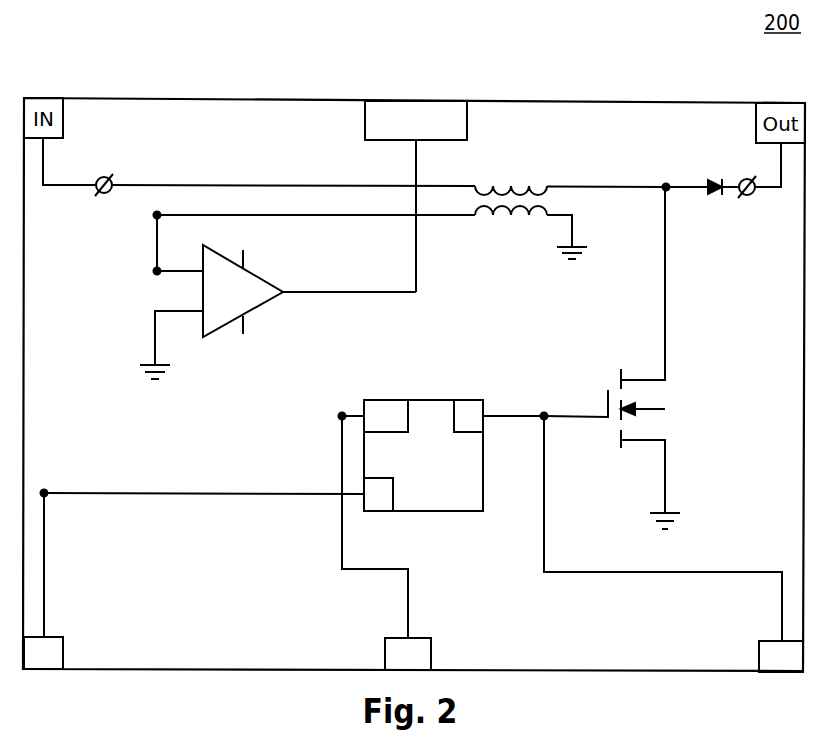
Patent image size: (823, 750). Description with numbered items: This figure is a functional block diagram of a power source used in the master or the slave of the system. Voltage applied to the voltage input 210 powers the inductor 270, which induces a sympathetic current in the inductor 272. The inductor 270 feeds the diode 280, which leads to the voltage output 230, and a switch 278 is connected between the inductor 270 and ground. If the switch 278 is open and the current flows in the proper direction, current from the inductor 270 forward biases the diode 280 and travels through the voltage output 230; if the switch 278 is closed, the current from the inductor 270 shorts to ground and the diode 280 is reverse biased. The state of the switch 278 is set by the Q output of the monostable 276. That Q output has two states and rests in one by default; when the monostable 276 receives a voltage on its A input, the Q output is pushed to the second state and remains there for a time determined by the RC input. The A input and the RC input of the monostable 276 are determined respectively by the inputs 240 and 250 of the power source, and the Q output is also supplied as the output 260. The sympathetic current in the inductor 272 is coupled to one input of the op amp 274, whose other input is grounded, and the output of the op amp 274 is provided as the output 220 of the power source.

The voltage input 210 is at (113, 221).
The output 220 is at (365, 120).
The voltage output 230 is at (760, 262).
The input 240 is at (64, 656).
The input 250 is at (385, 653).
The output 260 is at (759, 658).
The inductor 270 is at (503, 183).
The inductor 272 is at (505, 222).
The op amp 274 is at (243, 281).
The monostable 276 is at (427, 399).
The switch 278 is at (604, 410).
The diode 280 is at (712, 198).